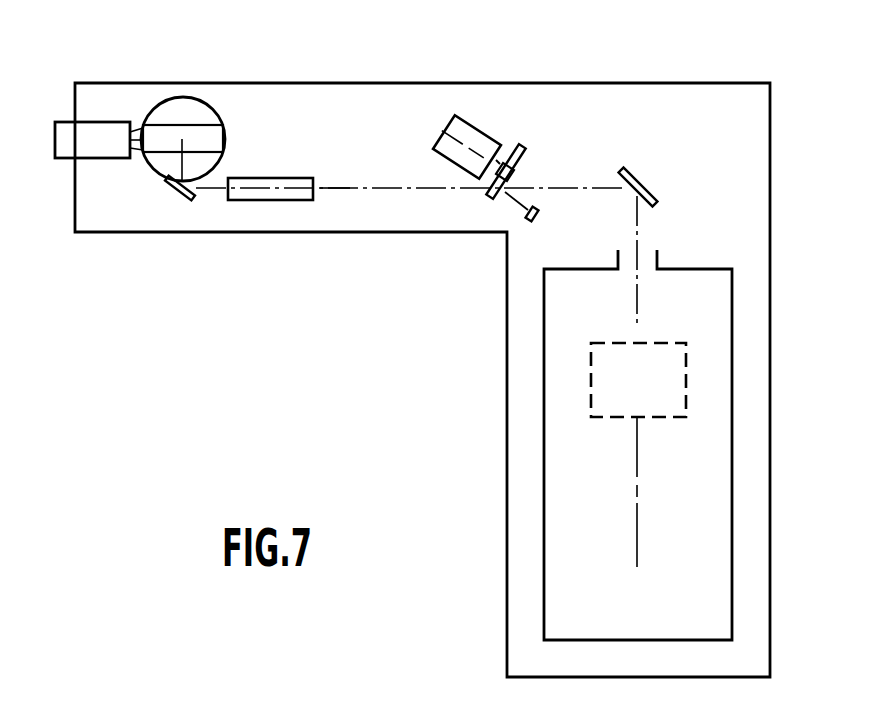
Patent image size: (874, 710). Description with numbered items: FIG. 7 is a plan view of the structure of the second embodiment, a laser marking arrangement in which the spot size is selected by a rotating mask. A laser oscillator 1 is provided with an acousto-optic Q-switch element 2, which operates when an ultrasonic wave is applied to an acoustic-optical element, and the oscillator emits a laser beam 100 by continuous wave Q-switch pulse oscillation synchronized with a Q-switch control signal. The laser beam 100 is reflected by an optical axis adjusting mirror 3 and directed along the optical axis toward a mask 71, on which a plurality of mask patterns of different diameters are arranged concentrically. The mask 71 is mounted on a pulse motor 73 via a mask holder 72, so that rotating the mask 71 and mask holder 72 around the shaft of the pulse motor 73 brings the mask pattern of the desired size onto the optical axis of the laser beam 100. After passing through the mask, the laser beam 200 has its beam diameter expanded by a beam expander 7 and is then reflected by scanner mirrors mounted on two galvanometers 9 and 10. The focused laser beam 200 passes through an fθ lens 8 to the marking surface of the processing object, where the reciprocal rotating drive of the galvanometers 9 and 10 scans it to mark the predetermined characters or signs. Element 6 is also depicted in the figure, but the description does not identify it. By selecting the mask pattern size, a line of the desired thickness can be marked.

The laser oscillator 1 is at (733, 372).
The acousto-optic Q-switch element 2 is at (591, 378).
The optical axis adjusting mirror 3 is at (648, 178).
The detector 6 is at (524, 209).
The beam expander 7 is at (292, 178).
The fθ lens 8 is at (225, 127).
The galvanometer 9 is at (181, 200).
The galvanometer 10 is at (95, 121).
The mask 71 is at (511, 182).
The mask holder 72 is at (517, 146).
The pulse motor 73 is at (478, 125).
The laser beam 100 is at (600, 188).
The laser beam 200 is at (337, 187).